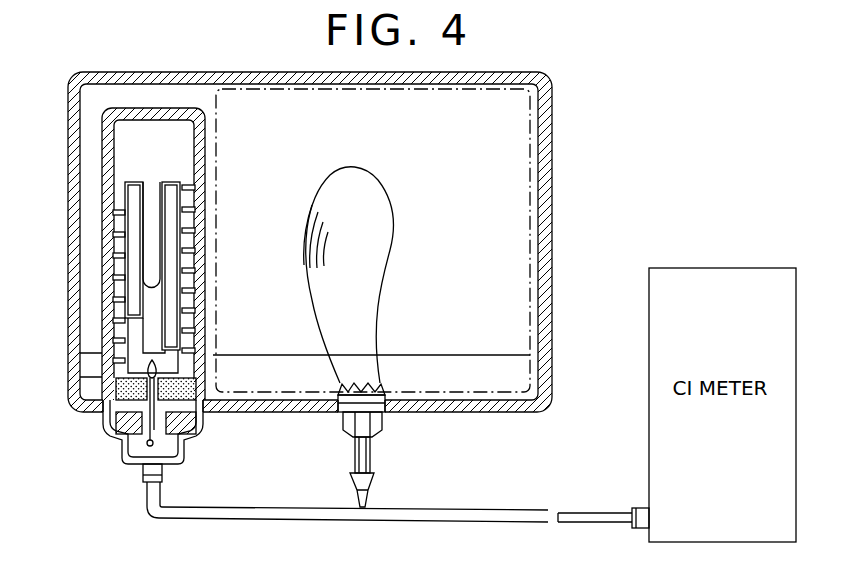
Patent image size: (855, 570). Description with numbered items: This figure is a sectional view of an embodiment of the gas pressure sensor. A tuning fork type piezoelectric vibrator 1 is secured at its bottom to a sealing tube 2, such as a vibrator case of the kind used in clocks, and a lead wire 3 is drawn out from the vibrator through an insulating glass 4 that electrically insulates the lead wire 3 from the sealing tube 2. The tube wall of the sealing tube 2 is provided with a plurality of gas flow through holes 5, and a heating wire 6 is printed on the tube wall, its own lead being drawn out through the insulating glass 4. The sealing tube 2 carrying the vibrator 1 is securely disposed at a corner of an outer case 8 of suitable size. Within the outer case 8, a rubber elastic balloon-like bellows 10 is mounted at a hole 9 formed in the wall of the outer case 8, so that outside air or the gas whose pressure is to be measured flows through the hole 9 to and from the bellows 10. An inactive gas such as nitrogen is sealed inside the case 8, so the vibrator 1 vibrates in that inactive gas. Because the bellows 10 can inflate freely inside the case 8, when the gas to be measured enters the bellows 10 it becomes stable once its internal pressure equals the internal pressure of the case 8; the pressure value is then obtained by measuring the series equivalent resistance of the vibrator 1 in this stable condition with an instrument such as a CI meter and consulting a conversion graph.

The tuning fork type piezoelectric vibrator 1 is at (128, 192).
The sealing tube 2 is at (105, 252).
The lead wire 3 is at (123, 438).
The insulating glass 4 is at (187, 433).
The gas flow through holes 5 is at (105, 140).
The heating wire 6 is at (115, 320).
The outer case 8 is at (550, 122).
The hole 9 is at (370, 405).
The rubber elastic balloon-like bellows 10 is at (393, 235).